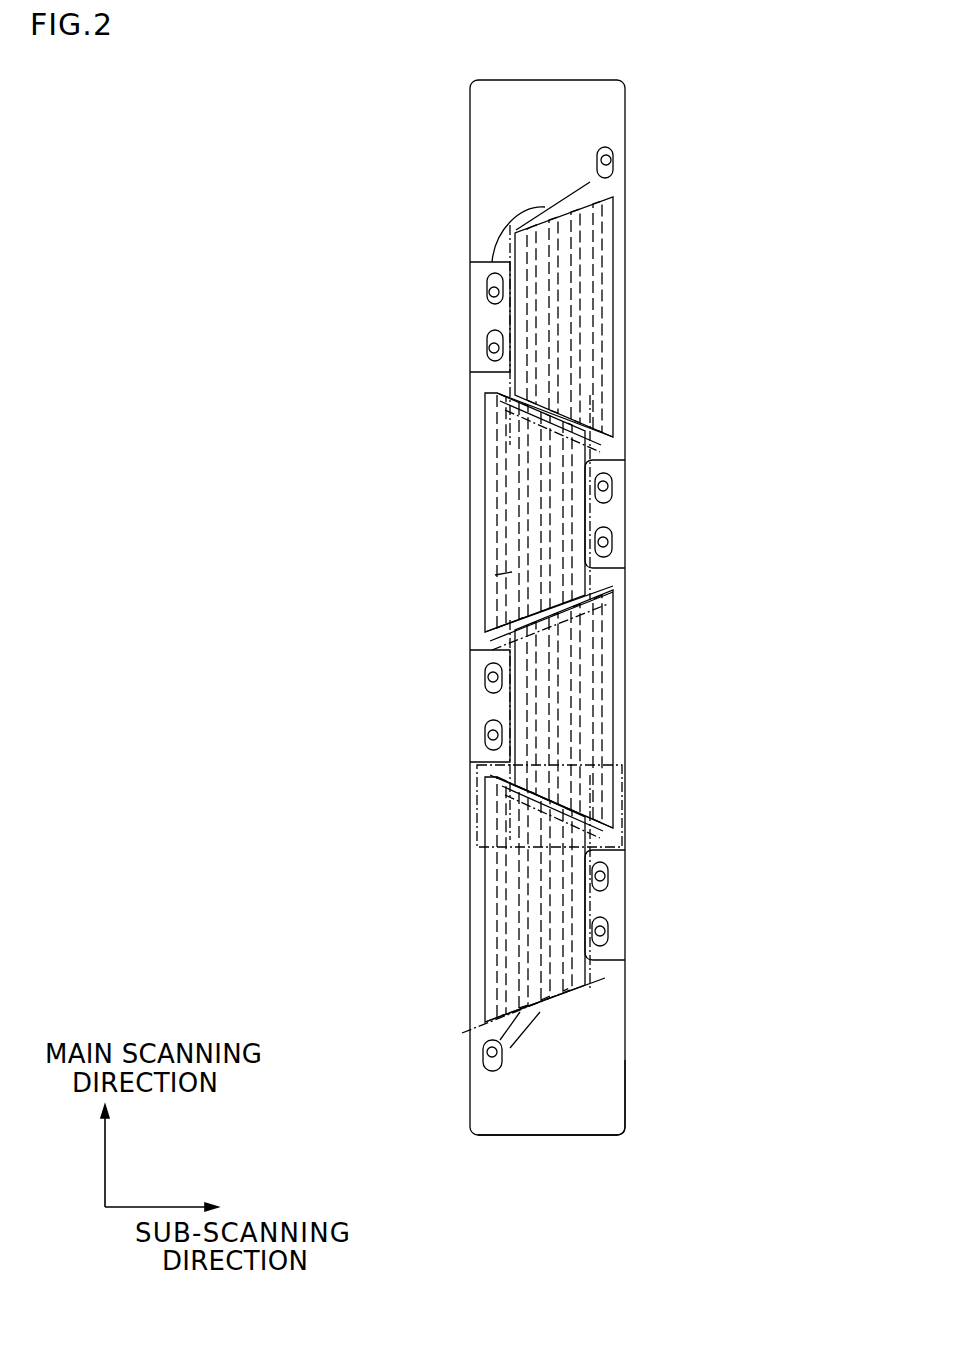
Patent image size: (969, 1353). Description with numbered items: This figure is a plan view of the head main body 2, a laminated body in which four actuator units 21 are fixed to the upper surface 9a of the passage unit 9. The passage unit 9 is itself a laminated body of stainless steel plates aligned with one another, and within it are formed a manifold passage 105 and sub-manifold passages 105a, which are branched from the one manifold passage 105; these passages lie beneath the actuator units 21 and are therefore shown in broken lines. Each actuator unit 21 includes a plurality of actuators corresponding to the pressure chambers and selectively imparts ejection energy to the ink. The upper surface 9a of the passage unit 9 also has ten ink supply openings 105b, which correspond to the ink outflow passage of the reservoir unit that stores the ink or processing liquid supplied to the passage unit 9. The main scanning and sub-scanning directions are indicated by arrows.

The head main body 2 is at (638, 109).
The passage unit 9 is at (627, 580).
The upper surface of the passage unit 9a is at (612, 1067).
The actuator unit 21 is at (614, 303).
The manifold passage 105 is at (470, 262).
The sub-manifold passage 105a is at (512, 600).
The ink supply opening 105b is at (610, 167).